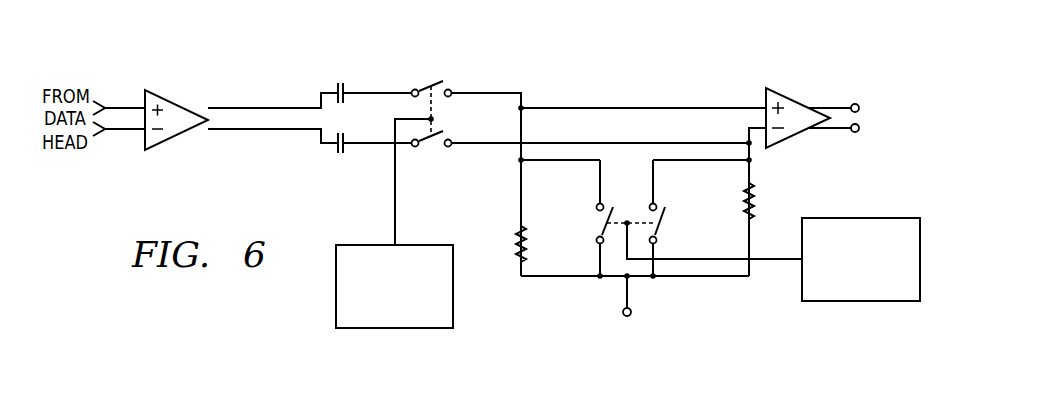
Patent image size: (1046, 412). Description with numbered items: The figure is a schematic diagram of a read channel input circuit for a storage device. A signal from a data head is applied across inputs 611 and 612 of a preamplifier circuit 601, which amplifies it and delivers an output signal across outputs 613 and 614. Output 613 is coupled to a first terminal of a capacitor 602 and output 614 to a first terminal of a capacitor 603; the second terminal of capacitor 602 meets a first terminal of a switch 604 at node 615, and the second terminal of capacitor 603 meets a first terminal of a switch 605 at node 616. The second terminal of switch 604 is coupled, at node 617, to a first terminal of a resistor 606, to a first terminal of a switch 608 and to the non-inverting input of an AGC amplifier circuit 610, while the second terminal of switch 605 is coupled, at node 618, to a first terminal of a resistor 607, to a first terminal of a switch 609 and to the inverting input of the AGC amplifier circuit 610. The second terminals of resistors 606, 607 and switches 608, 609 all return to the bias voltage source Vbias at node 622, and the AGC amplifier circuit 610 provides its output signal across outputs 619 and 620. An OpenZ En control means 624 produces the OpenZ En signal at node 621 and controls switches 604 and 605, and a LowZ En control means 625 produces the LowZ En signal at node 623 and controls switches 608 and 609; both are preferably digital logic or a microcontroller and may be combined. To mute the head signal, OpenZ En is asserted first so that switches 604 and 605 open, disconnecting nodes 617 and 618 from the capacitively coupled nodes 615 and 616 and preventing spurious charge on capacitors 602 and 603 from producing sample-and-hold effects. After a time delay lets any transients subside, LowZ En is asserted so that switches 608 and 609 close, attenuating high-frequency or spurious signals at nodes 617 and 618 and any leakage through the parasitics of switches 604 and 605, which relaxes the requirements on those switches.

The preamplifier circuit 601 is at (168, 148).
The capacitor 602 is at (337, 86).
The capacitor 603 is at (337, 150).
The switch 604 is at (440, 82).
The switch 605 is at (433, 146).
The resistor 606 is at (517, 242).
The resistor 607 is at (745, 196).
The switch 608 is at (598, 209).
The switch 609 is at (658, 230).
The AGC amplifier circuit 610 is at (782, 88).
The input 611 is at (123, 108).
The input 612 is at (123, 130).
The output 613 is at (255, 108).
The output 614 is at (248, 130).
The node 615 is at (393, 92).
The node 616 is at (378, 144).
The node 617 is at (635, 108).
The node 618 is at (505, 145).
The output 619 is at (840, 106).
The output 620 is at (840, 130).
The node 621 is at (394, 207).
The node 622 is at (631, 292).
The node 623 is at (762, 262).
The OpenZ En control means 624 is at (454, 302).
The LowZ En control means 625 is at (860, 302).